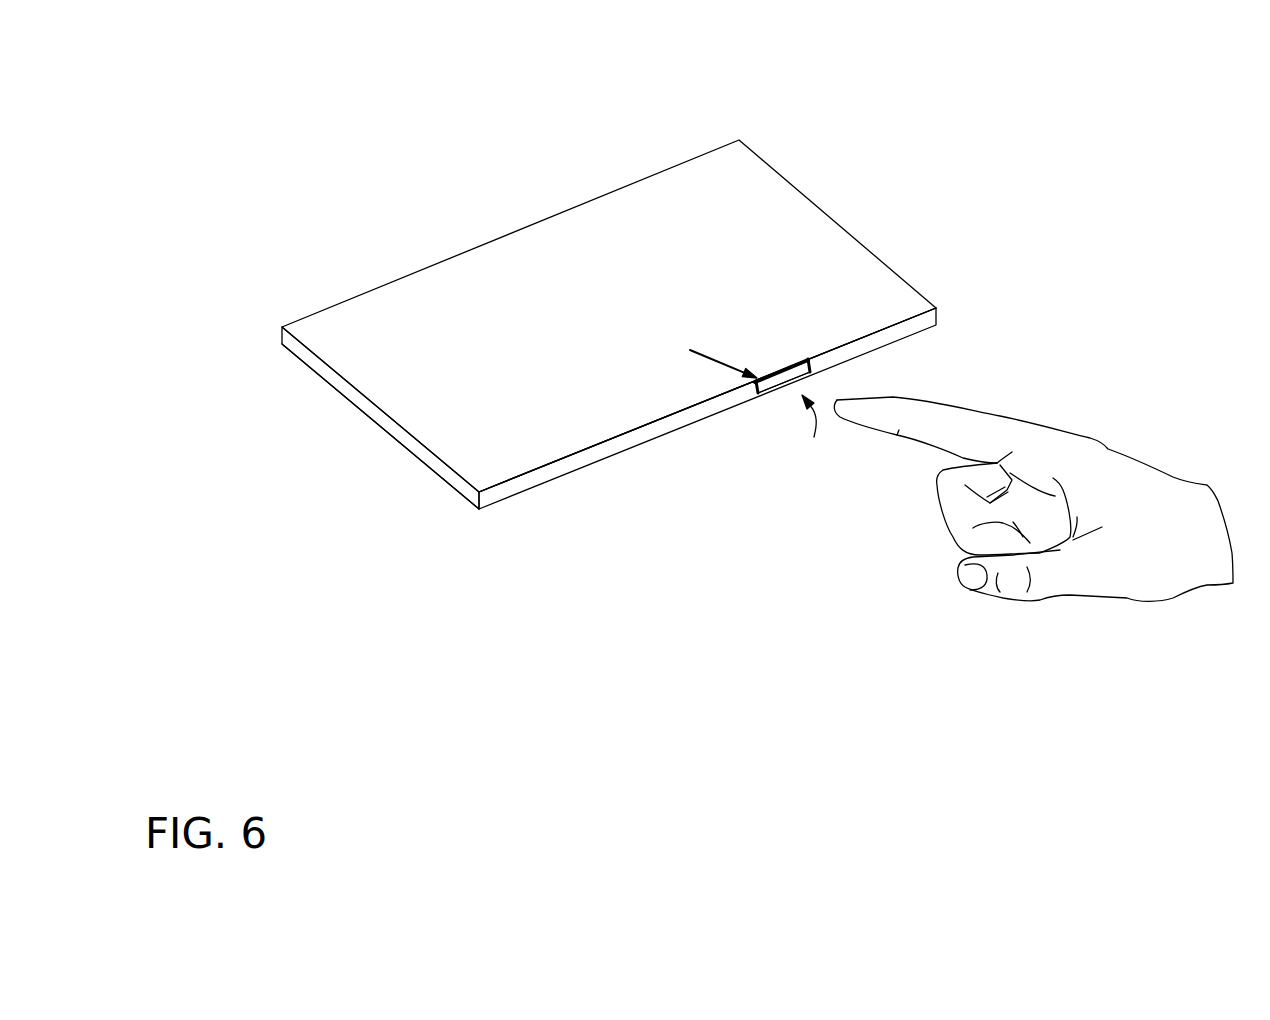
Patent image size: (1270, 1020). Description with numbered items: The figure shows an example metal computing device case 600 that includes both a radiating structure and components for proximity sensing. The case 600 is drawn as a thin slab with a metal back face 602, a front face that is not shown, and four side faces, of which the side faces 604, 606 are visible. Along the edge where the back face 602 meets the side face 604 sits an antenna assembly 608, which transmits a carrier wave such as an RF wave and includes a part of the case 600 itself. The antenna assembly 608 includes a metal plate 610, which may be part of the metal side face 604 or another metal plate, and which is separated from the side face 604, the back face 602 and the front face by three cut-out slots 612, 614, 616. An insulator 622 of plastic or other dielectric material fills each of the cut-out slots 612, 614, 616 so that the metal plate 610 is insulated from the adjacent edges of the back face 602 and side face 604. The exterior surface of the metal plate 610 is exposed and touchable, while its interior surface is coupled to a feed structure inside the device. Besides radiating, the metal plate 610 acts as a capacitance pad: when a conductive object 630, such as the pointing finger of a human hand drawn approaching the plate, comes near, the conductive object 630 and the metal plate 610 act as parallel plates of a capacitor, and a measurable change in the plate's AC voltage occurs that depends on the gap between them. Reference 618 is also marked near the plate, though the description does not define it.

The metal computing device case 600 is at (257, 89).
The back face 602 is at (773, 220).
The side face 604 is at (852, 349).
The side face 606 is at (433, 468).
The antenna assembly 608 is at (814, 437).
The metal plate 610 is at (783, 378).
The cut-out slot 612 is at (832, 352).
The cut-out slot 614 is at (737, 388).
The cut-out slot 616 is at (768, 370).
The connector bottom surface 618 is at (773, 392).
The insulator 622 is at (690, 350).
The conductive object 630 is at (1062, 432).